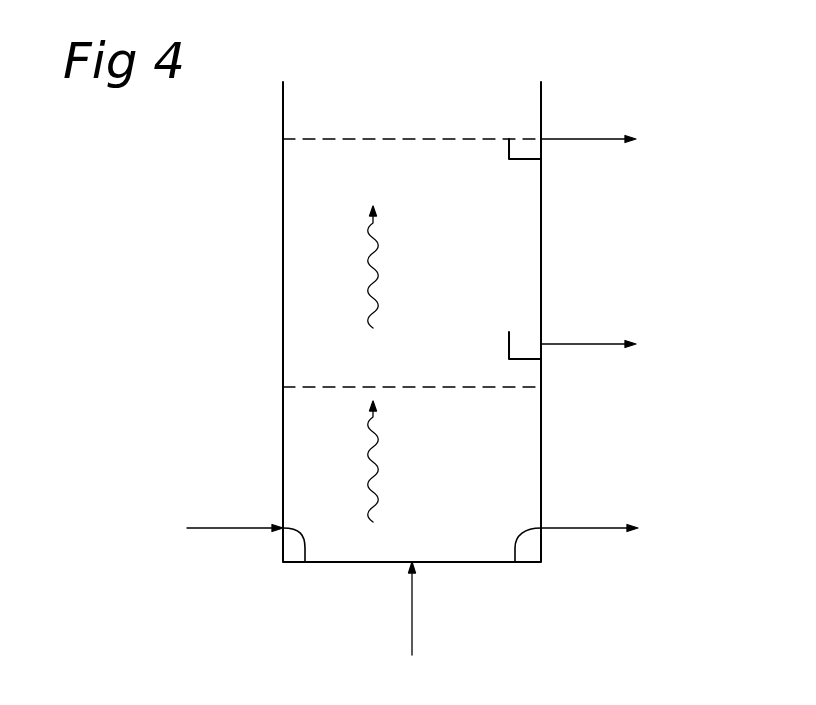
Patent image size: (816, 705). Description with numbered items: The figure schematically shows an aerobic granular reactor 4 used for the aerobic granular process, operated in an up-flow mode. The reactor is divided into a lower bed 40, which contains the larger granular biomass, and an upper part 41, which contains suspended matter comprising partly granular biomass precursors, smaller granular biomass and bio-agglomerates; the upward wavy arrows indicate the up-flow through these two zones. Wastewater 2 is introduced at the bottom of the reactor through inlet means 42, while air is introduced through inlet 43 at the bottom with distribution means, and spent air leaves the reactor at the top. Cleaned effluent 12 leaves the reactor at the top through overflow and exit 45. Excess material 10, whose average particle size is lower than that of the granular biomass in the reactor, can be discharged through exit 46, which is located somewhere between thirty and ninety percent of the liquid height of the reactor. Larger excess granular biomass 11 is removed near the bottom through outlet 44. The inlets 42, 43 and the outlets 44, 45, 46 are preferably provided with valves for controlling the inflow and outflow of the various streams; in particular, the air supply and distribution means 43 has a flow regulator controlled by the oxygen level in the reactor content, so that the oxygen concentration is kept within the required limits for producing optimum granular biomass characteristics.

The aerobic granular reactor 4 is at (276, 336).
The wastewater 2 is at (220, 528).
The excess material 10 is at (604, 344).
The larger excess granular biomass 11 is at (600, 528).
The cleaned effluent 12 is at (601, 139).
The lower bed 40 is at (467, 426).
The upper part 41 is at (442, 214).
The inlet means 42 is at (305, 562).
The air inlet 43 is at (412, 600).
The outlet 44 is at (515, 562).
The overflow and exit 45 is at (524, 148).
The exit 46 is at (523, 340).